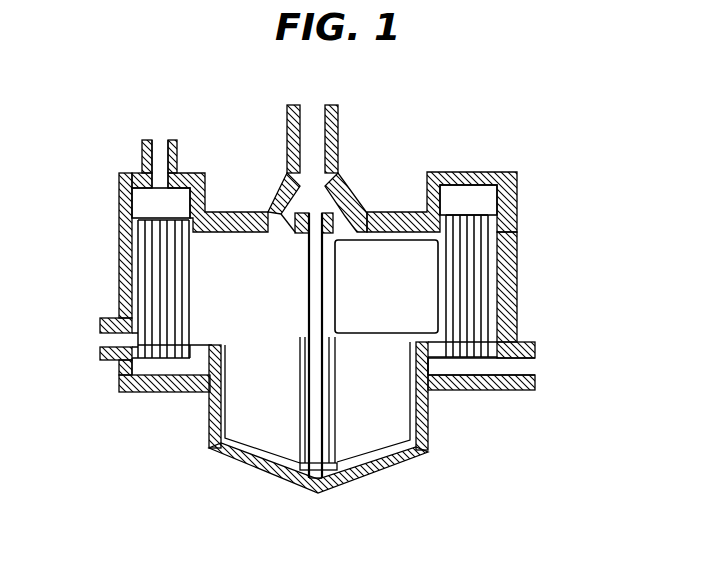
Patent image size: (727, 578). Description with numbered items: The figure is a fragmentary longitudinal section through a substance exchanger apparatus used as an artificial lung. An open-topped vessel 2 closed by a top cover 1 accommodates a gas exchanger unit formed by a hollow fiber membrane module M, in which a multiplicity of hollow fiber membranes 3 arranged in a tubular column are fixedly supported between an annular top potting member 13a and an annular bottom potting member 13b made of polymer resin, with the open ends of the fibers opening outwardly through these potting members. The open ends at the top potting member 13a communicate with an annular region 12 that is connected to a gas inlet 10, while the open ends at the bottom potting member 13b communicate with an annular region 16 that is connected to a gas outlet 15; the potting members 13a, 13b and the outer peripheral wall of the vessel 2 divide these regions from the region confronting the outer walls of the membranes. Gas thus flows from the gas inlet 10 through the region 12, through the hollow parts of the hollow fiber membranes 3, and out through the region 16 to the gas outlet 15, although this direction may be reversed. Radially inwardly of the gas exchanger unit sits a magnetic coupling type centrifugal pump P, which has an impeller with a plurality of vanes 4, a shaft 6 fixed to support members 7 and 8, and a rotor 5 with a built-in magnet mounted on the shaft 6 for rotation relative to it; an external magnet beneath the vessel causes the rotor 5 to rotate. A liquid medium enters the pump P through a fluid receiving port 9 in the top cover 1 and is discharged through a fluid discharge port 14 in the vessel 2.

The top cover 1 is at (513, 187).
The open-topped vessel 2 is at (507, 327).
The hollow fiber membranes 3 is at (505, 268).
The vanes 4 is at (408, 272).
The rotor 5 is at (380, 428).
The shaft 6 is at (313, 272).
The support member 7 is at (290, 485).
The support member 8 is at (350, 232).
The fluid receiving port 9 is at (317, 143).
The gas inlet 10 is at (161, 150).
The annular region 12 is at (140, 204).
The top potting member 13a is at (135, 245).
The bottom potting member 13b is at (137, 357).
The fluid discharge port 14 is at (107, 337).
The gas outlet 15 is at (523, 365).
The annular region 16 is at (450, 366).
The hollow fiber membrane module M is at (463, 205).
The centrifugal pump P is at (358, 418).